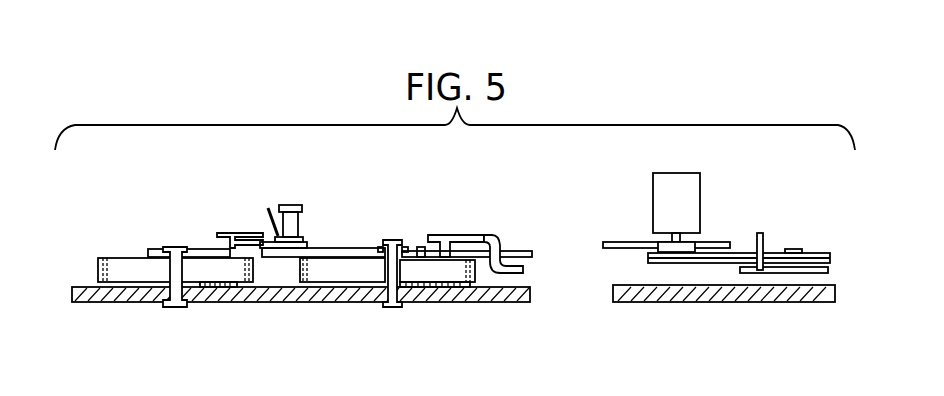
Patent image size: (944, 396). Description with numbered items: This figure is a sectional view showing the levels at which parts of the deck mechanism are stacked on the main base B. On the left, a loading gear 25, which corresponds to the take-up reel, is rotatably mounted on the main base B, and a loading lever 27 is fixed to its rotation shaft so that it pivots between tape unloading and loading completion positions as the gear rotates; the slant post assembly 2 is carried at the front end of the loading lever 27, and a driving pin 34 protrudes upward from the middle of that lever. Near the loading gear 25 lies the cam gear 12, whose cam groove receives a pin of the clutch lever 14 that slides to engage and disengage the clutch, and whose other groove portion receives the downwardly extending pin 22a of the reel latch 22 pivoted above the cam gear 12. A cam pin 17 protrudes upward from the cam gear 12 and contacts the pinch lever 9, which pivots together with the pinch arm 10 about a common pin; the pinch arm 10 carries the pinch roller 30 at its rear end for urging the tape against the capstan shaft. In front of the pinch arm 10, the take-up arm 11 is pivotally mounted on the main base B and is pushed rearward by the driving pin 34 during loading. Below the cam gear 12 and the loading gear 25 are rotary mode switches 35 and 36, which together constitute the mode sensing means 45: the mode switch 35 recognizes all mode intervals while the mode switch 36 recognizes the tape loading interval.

The slant post assembly 2 is at (302, 233).
The pinch lever 9 is at (518, 251).
The pinch arm 10 is at (770, 250).
The take-up arm 11 is at (253, 237).
The cam gear 12 is at (468, 282).
The clutch lever 14 is at (355, 248).
The cam pin 17 is at (415, 250).
The reel latch 22 is at (490, 236).
The downwardly extending pin 22a is at (445, 236).
The loading gear 25 is at (122, 268).
The loading lever 27 is at (200, 248).
The pinch roller 30 is at (700, 187).
The driving pin 34 is at (235, 235).
The mode switch 35 is at (440, 288).
The mode switch 36 is at (225, 293).
The mode sensing means 45 is at (367, 350).
The main base B is at (94, 302).